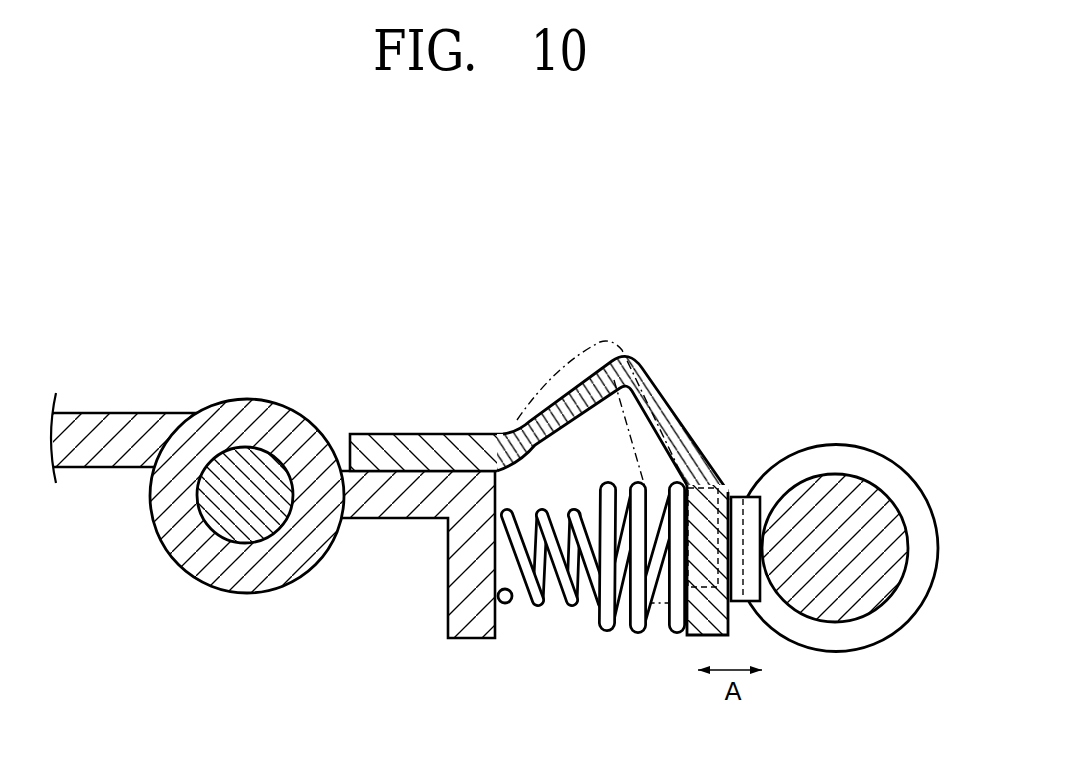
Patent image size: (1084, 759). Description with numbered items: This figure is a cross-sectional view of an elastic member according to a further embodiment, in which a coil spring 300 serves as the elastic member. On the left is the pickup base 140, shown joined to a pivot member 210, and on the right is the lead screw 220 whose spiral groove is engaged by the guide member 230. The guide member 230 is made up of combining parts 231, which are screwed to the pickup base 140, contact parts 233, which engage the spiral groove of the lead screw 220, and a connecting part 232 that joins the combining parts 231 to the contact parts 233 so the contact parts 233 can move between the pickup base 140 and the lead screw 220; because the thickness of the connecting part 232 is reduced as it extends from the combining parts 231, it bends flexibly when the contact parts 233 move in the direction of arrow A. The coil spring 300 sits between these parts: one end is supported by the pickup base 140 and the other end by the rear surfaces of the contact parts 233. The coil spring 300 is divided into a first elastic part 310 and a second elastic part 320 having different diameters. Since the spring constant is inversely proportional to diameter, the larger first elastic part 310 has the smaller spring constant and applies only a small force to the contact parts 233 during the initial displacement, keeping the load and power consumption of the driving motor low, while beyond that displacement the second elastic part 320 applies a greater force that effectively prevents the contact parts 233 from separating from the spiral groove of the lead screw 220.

The pickup base 140 is at (140, 418).
The pivot member 210 is at (245, 452).
The lead screw 220 is at (890, 438).
The guide member 230 is at (560, 335).
The combining parts 231 is at (420, 445).
The connecting part 232 is at (637, 372).
The contact parts 233 is at (752, 593).
The coil spring 300 is at (632, 519).
The first elastic part 310 is at (597, 647).
The second elastic part 320 is at (500, 647).